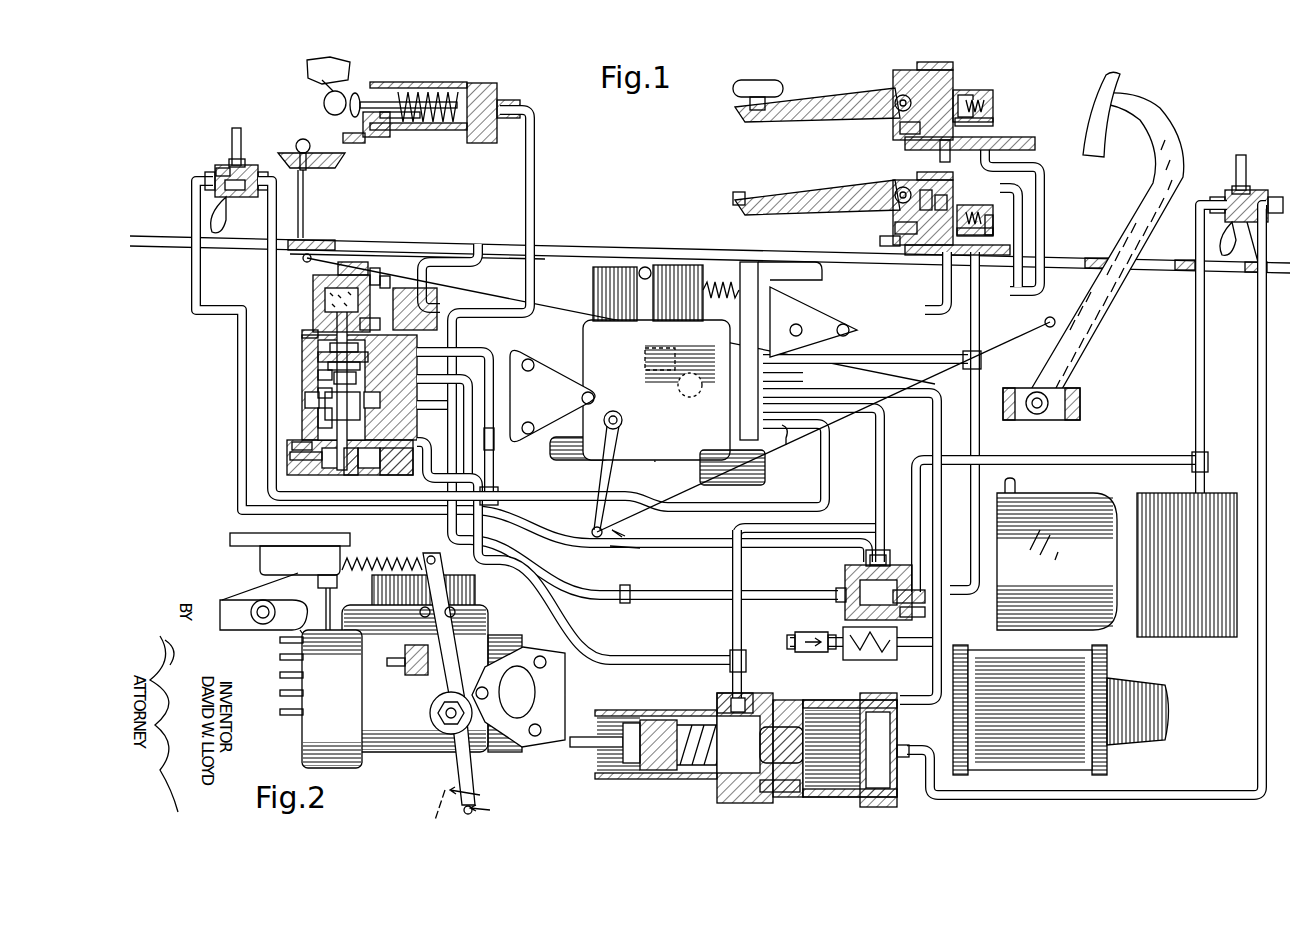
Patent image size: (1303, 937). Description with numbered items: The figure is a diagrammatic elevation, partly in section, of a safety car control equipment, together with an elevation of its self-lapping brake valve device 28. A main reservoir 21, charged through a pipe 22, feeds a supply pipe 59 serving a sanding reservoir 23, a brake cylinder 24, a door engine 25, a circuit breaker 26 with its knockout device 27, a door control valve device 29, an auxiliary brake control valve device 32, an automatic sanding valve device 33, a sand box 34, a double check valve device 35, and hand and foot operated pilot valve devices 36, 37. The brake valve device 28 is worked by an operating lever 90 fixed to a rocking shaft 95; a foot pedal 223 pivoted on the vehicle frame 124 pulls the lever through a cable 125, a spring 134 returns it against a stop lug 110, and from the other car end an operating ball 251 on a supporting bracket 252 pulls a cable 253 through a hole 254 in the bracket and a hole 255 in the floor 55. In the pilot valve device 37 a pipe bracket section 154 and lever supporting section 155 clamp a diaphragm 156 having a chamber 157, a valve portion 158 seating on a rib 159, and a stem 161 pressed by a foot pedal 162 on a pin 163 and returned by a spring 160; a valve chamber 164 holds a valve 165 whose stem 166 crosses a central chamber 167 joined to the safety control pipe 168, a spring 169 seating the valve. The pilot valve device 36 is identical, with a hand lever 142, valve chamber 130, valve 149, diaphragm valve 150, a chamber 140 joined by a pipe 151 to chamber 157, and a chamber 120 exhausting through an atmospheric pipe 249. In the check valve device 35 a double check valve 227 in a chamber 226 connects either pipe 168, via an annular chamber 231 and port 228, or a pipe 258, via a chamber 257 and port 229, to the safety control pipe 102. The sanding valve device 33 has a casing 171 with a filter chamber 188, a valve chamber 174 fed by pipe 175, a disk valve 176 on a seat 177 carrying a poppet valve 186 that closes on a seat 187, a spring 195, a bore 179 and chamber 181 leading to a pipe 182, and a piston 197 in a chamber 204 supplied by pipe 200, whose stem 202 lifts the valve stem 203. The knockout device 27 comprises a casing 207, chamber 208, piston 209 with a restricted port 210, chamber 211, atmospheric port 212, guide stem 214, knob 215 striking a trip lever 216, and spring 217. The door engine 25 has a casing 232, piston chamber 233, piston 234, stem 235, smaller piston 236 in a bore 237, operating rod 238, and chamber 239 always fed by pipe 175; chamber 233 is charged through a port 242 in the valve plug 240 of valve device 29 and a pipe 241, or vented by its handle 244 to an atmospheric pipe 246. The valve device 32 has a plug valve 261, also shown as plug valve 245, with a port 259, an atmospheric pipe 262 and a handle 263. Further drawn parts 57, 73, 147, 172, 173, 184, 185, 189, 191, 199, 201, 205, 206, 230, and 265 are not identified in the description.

In FIG. 1, the main reservoir 21 is at (1057, 546).
In FIG. 1, the pipe 22 is at (1016, 486).
In FIG. 1, the sanding reservoir 23 is at (1172, 640).
In FIG. 1, the brake cylinder 24 is at (1050, 768).
In FIG. 1, the door engine 25 is at (743, 746).
In FIG. 1, the motor controlling circuit breaker 26 is at (332, 66).
In FIG. 1, the circuit breaker knockout device 27 is at (417, 104).
In FIG. 1, the self-lapping brake valve device 28 is at (782, 387).
In FIG. 2, the self-lapping brake valve device 28 is at (400, 668).
In FIG. 1, the hand operated door control valve device 29 is at (1219, 215).
In FIG. 1, the auxiliary hand operated brake control valve device 32 is at (206, 164).
In FIG. 1, the automatic sanding valve device 33 is at (327, 353).
In FIG. 1, the sand box 34 is at (885, 660).
In FIG. 1, the double check valve device 35 is at (881, 583).
In FIG. 1, the hand operated pilot valve device 36 is at (908, 147).
In FIG. 1, the foot operated pilot valve device 37 is at (899, 235).
In FIG. 1, the floor 55 is at (652, 252).
In FIG. 1, the pipe 57 is at (855, 395).
In FIG. 2, the pipe 57 is at (280, 675).
In FIG. 1, the fluid pressure supply pipe 59 is at (264, 262).
In FIG. 2, the fluid pressure supply pipe 59 is at (280, 640).
In FIG. 1, the pipe 73 is at (808, 378).
In FIG. 2, the pipe 73 is at (280, 657).
In FIG. 1, the operating lever 90 is at (806, 437).
In FIG. 2, the operating lever 90 is at (475, 772).
In FIG. 1, the rocking shaft 95 is at (623, 420).
In FIG. 2, the rocking shaft 95 is at (440, 730).
In FIG. 1, the safety control pipe 102 is at (877, 470).
In FIG. 2, the safety control pipe 102 is at (280, 693).
In FIG. 1, the stop lug 110 is at (675, 372).
In FIG. 2, the stop lug 110 is at (415, 675).
In FIG. 1, the chamber 120 is at (950, 90).
In FIG. 1, the vehicle frame 124 is at (1078, 392).
In FIG. 1, the cable 125 is at (792, 449).
In FIG. 1, the valve chamber 130 is at (993, 126).
In FIG. 1, the spring 134 is at (710, 268).
In FIG. 2, the spring 134 is at (370, 560).
In FIG. 1, the chamber 140 is at (985, 95).
In FIG. 1, the hand operating lever 142 is at (775, 82).
In FIG. 1, the mounting plate 147 is at (1035, 146).
In FIG. 1, the valve 149 is at (993, 95).
In FIG. 1, the diaphragm valve 150 is at (895, 92).
In FIG. 1, the pipe 151 is at (940, 312).
In FIG. 1, the pipe bracket section 154 is at (947, 262).
In FIG. 1, the lever supporting section 155 is at (915, 252).
In FIG. 1, the diaphragm 156 is at (880, 241).
In FIG. 1, the chamber 157 is at (900, 128).
In FIG. 1, the diaphragm valve 158 is at (895, 200).
In FIG. 1, the annular valve seat rib 159 is at (1000, 231).
In FIG. 1, the spring 160 is at (860, 120).
In FIG. 1, the stem 161 is at (895, 228).
In FIG. 1, the foot pedal 162 is at (745, 200).
In FIG. 1, the pin 163 is at (905, 188).
In FIG. 1, the valve chamber 164 is at (995, 232).
In FIG. 1, the valve 165 is at (993, 105).
In FIG. 1, the stem 166 is at (945, 193).
In FIG. 1, the central chamber 167 is at (926, 188).
In FIG. 1, the safety control pipe 168 is at (900, 356).
In FIG. 1, the spring 169 is at (995, 218).
In FIG. 1, the casing 171 is at (318, 393).
In FIG. 1, the port 172 is at (433, 339).
In FIG. 1, the piston 173 is at (318, 338).
In FIG. 1, the valve chamber 174 is at (318, 357).
In FIG. 1, the pipe 175 is at (470, 375).
In FIG. 1, the disk valve 176 is at (330, 348).
In FIG. 1, the seat 177 is at (318, 376).
In FIG. 1, the bore 179 is at (441, 416).
In FIG. 1, the chamber 181 is at (334, 379).
In FIG. 1, the sanding pipe 182 is at (536, 190).
In FIG. 1, the port 184 is at (430, 394).
In FIG. 1, the housing 185 is at (426, 308).
In FIG. 1, the poppet valve 186 is at (393, 284).
In FIG. 1, the seat 187 is at (313, 290).
In FIG. 1, the filter chamber 188 is at (325, 298).
In FIG. 1, the port 189 is at (377, 268).
In FIG. 1, the screen 191 is at (355, 262).
In FIG. 1, the spring 195 is at (375, 322).
In FIG. 1, the piston 197 is at (344, 470).
In FIG. 1, the pipe 199 is at (494, 442).
In FIG. 1, the passage and pipe 200 is at (545, 506).
In FIG. 2, the passage and pipe 200 is at (280, 712).
In FIG. 1, the chamber 201 is at (318, 412).
In FIG. 1, the stem 202 is at (325, 402).
In FIG. 1, the stem 203 is at (328, 366).
In FIG. 1, the chamber 204 is at (395, 474).
In FIG. 1, the valve 205 is at (290, 458).
In FIG. 1, the valve seat 206 is at (292, 446).
In FIG. 1, the casing 207 is at (478, 82).
In FIG. 1, the chamber 208 is at (512, 108).
In FIG. 1, the piston 209 is at (460, 138).
In FIG. 1, the restricted port 210 is at (500, 98).
In FIG. 1, the chamber 211 is at (378, 138).
In FIG. 1, the atmospheric port 212 is at (418, 130).
In FIG. 1, the guide stem 214 is at (368, 100).
In FIG. 1, the knob 215 is at (352, 116).
In FIG. 1, the trip lever 216 is at (324, 103).
In FIG. 1, the spring 217 is at (428, 91).
In FIG. 1, the foot pedal 223 is at (1118, 290).
In FIG. 1, the chamber 226 is at (926, 615).
In FIG. 1, the double check valve 227 is at (926, 597).
In FIG. 1, the port 228 is at (888, 562).
In FIG. 1, the port 229 is at (860, 549).
In FIG. 1, the spring 230 is at (700, 775).
In FIG. 1, the annular chamber 231 is at (882, 555).
In FIG. 1, the casing 232 is at (790, 705).
In FIG. 1, the piston chamber 233 is at (875, 745).
In FIG. 1, the piston 234 is at (815, 795).
In FIG. 1, the stem 235 is at (716, 700).
In FIG. 1, the piston 236 is at (655, 775).
In FIG. 1, the bore 237 is at (598, 712).
In FIG. 1, the operating rod 238 is at (575, 750).
In FIG. 1, the chamber 239 is at (748, 704).
In FIG. 1, the valve plug 240 is at (1235, 188).
In FIG. 1, the pipe 241 is at (1262, 332).
In FIG. 1, the port 242 is at (1250, 240).
In FIG. 1, the operating handle 244 is at (1222, 245).
In FIG. 1, the plug valve 245 is at (240, 158).
In FIG. 1, the atmospheric pipe 246 is at (1247, 158).
In FIG. 1, the exhaust pipe 249 is at (938, 148).
In FIG. 1, the operating ball 251 is at (300, 145).
In FIG. 1, the supporting bracket 252 is at (298, 180).
In FIG. 1, the cable 253 is at (310, 230).
In FIG. 1, the hole 254 is at (310, 170).
In FIG. 1, the hole 255 is at (310, 244).
In FIG. 1, the chamber 257 is at (838, 592).
In FIG. 1, the pipe 258 is at (640, 592).
In FIG. 1, the port 259 is at (215, 170).
In FIG. 1, the plug valve 261 is at (225, 185).
In FIG. 1, the atmospheric pipe 262 is at (232, 133).
In FIG. 1, the operating handle 263 is at (210, 222).
In FIG. 1, the strainer 265 is at (882, 643).